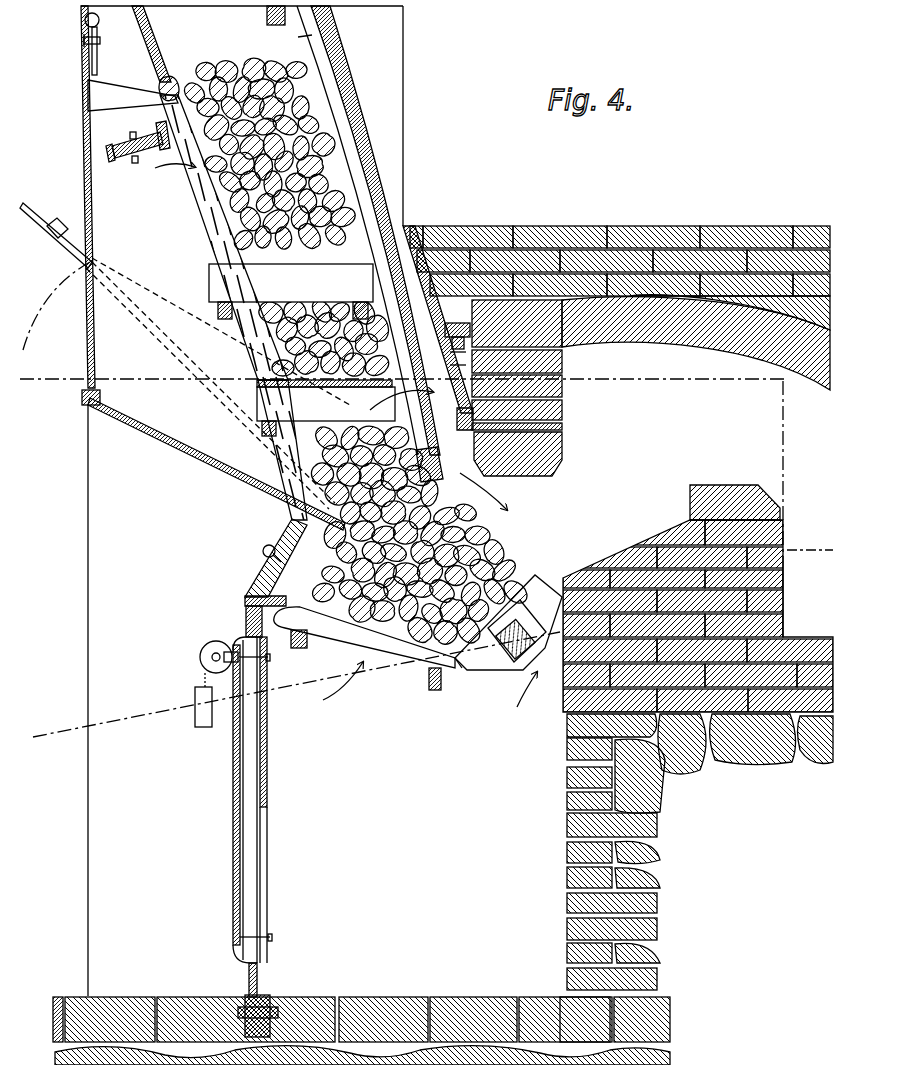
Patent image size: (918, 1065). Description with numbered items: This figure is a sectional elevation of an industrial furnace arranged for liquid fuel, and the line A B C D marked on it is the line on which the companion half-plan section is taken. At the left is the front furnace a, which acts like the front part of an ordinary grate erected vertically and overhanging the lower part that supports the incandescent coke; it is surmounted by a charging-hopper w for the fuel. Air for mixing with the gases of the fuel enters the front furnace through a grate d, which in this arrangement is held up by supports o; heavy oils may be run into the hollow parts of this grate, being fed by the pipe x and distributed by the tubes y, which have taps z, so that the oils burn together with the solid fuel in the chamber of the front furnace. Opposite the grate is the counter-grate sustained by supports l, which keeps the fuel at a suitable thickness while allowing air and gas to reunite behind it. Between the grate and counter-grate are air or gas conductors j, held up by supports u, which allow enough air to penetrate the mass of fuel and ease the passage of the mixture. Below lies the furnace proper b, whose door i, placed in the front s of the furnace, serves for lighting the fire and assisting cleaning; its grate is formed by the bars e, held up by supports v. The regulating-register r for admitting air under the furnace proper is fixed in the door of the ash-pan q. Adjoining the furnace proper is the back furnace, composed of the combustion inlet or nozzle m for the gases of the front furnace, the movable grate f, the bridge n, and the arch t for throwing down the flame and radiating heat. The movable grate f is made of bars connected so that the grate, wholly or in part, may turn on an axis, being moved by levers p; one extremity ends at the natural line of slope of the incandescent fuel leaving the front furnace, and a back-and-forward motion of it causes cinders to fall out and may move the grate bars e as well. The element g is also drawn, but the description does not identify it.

The front furnace a is at (318, 142).
The furnace proper b is at (392, 652).
The grate d is at (240, 233).
The grate bars e is at (296, 672).
The movable grate f is at (493, 660).
The lever arm g is at (242, 501).
The door i is at (260, 578).
The air or gas conductors j is at (302, 342).
The supports l is at (442, 462).
The combustion inlet or nozzle m is at (419, 517).
The bridge n is at (698, 587).
The supports o is at (198, 309).
The levers p is at (183, 356).
The ash-pan q is at (233, 778).
The regulating-register r is at (231, 890).
The front of the furnace s is at (246, 608).
The arch t is at (697, 341).
The supports u is at (225, 320).
The supports v is at (299, 650).
The charging-hopper w is at (260, 191).
The pipe x is at (100, 20).
The tubes y is at (103, 51).
The taps z is at (98, 41).
The section-line point A is at (402, 369).
The section-line point B is at (771, 470).
The section-line point C is at (810, 542).
The section-line point D is at (802, 585).